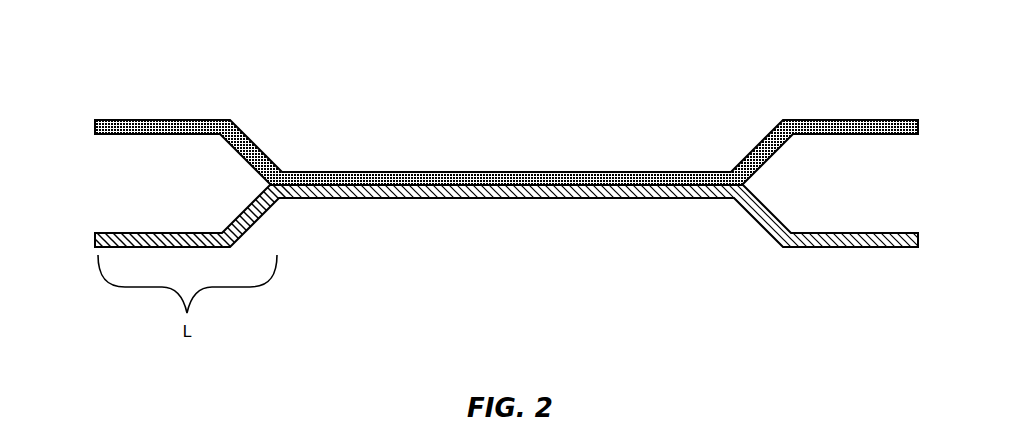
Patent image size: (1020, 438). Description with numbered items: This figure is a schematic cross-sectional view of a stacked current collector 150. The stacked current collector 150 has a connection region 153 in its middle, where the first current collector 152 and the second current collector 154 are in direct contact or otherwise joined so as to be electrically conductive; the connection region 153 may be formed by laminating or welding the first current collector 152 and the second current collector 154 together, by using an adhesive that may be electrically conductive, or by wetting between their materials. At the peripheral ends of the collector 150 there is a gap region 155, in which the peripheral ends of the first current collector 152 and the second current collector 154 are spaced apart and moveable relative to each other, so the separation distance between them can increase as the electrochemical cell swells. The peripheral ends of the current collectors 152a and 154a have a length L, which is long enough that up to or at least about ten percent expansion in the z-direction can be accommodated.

The stacked current collector 150 is at (313, 62).
The first current collector 152 is at (825, 119).
The peripheral end of the first current collector 152a is at (172, 119).
The connection region 153 is at (740, 220).
The second current collector 154 is at (852, 234).
The peripheral end of the second current collector 154a is at (188, 232).
The gap region 155 is at (90, 112).